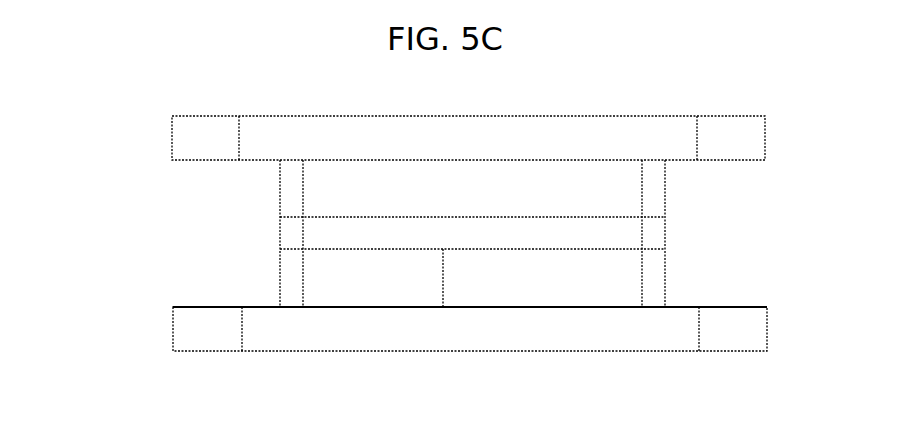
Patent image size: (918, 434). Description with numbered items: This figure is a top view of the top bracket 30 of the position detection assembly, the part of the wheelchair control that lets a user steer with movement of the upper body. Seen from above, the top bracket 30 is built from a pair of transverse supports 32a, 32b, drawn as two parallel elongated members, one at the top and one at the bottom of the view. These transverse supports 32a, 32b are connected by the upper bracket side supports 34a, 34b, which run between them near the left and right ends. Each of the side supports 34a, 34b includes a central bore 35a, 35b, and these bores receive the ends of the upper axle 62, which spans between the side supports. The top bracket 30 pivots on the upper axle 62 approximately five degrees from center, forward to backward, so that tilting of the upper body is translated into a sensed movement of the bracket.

The top bracket 30 is at (70, 257).
The transverse support 32a is at (768, 336).
The transverse support 32b is at (764, 138).
The upper bracket side support 34a is at (292, 287).
The upper bracket side support 34b is at (652, 282).
The central bore 35a is at (290, 237).
The central bore 35b is at (655, 235).
The upper axle 62 is at (443, 307).